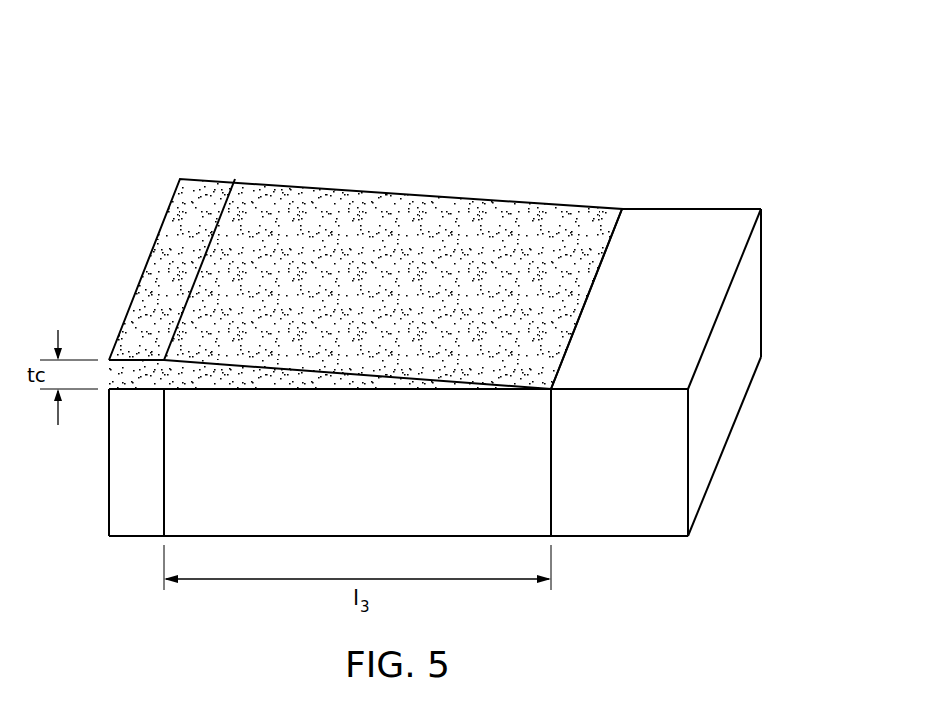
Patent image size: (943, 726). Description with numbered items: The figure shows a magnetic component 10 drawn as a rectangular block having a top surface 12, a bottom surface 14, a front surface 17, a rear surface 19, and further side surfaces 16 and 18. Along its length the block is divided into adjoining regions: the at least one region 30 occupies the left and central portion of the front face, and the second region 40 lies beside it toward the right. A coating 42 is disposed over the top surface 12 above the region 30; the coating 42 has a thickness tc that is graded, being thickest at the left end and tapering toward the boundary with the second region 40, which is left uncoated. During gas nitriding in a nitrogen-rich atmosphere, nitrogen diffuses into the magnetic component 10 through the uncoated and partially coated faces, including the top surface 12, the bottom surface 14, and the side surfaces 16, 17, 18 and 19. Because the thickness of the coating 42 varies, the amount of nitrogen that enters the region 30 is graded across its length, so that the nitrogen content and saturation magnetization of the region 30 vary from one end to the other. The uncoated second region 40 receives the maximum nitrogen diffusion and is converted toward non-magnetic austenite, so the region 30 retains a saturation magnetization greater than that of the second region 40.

The magnetic component 10 is at (667, 100).
The top surface 12 is at (690, 290).
The bottom surface 14 is at (712, 482).
The side surface 16 is at (731, 407).
The front surface 17 is at (109, 498).
The side surface 18 is at (762, 315).
The rear surface 19 is at (715, 209).
The at least one region 30 is at (374, 465).
The second region 40 is at (635, 465).
The coating 42 is at (278, 278).